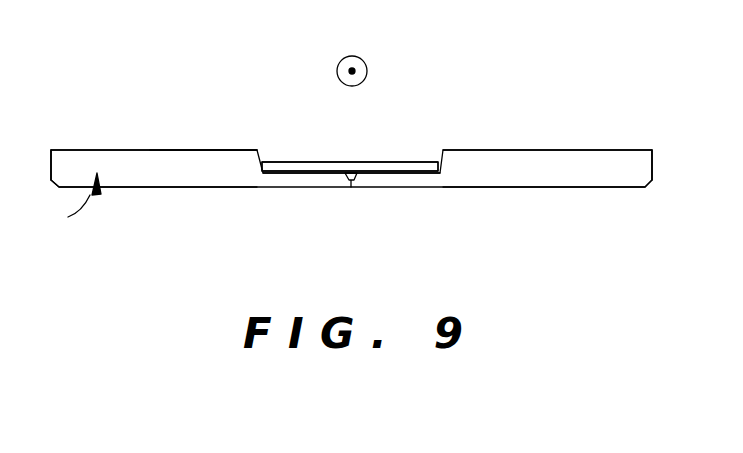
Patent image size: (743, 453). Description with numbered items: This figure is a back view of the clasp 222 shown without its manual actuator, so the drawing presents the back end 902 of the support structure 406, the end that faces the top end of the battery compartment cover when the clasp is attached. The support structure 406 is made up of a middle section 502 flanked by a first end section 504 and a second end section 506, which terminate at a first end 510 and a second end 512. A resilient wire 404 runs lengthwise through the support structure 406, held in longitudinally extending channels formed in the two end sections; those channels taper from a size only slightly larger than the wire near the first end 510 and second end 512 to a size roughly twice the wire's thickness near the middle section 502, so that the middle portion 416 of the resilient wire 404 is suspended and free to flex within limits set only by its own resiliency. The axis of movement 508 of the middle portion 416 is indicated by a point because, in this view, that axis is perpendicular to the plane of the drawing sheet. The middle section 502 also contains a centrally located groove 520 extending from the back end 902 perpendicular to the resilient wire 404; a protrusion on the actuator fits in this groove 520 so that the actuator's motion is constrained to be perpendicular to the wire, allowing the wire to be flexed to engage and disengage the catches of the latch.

The clasp 222 is at (580, 46).
The resilient wire 404 is at (422, 163).
The support structure 406 is at (200, 165).
The middle portion 416 is at (290, 163).
The middle section 502 is at (390, 178).
The first end section 504 is at (549, 172).
The second end section 506 is at (168, 170).
The axis of movement 508 is at (367, 70).
The first end 510 is at (653, 158).
The second end 512 is at (50, 160).
The groove 520 is at (352, 188).
The back end 902 is at (58, 199).